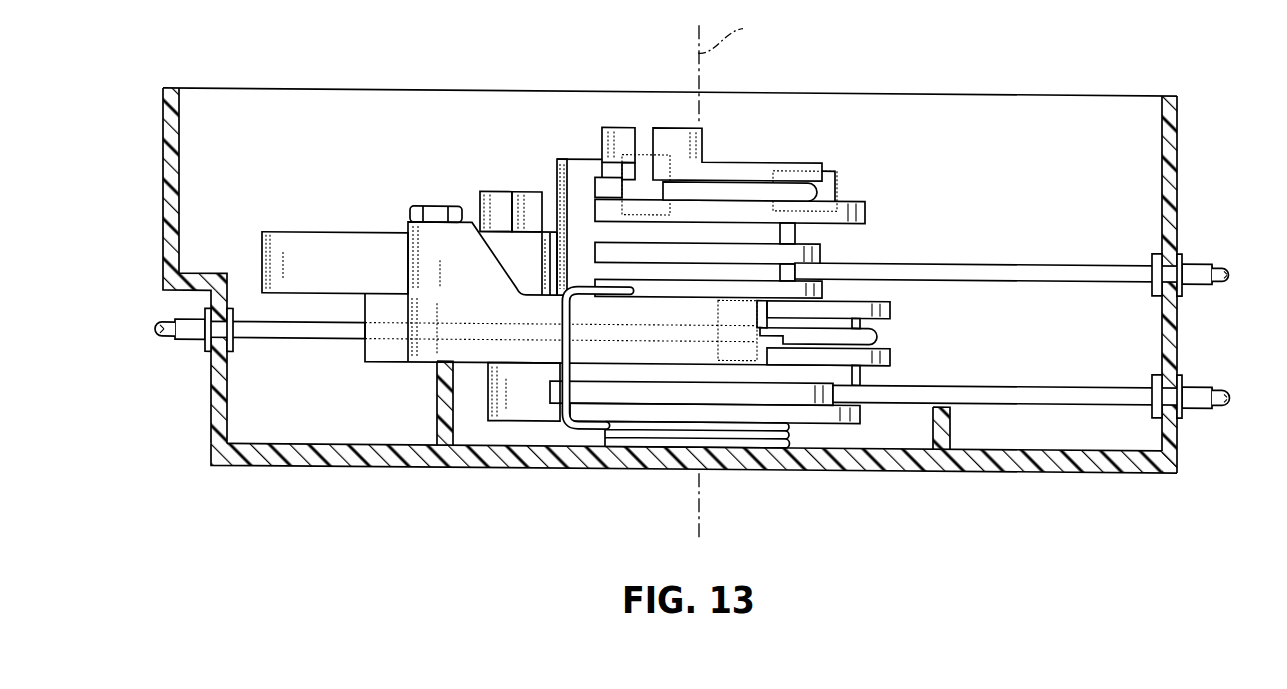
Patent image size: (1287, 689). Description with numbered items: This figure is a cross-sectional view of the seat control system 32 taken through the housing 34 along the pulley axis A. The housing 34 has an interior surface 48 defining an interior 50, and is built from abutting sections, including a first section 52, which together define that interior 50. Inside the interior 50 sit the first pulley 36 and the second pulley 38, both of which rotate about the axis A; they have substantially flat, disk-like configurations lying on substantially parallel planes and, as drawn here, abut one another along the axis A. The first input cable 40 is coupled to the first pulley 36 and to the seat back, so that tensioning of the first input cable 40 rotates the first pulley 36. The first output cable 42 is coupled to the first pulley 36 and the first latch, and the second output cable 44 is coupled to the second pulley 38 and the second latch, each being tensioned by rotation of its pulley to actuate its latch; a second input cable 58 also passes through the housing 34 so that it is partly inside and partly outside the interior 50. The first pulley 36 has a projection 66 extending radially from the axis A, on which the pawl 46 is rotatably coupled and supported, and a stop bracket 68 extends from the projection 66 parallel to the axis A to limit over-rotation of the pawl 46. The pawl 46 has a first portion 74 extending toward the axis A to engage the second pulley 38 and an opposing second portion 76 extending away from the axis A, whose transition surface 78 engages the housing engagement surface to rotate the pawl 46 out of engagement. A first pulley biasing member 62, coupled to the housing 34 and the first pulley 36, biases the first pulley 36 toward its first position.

The seat control system 32 is at (703, 290).
The housing 34 is at (1186, 157).
The first pulley 36 is at (862, 425).
The second pulley 38 is at (868, 210).
The first input cable 40 is at (270, 347).
The first output cable 42 is at (1220, 380).
The second output cable 44 is at (1220, 259).
The pawl 46 is at (305, 231).
The interior surface 48 is at (179, 123).
The interior 50 is at (314, 122).
The first section 52 is at (1172, 456).
The second input cable 58 is at (819, 189).
The first pulley biasing member 62 is at (606, 436).
The projection 66 is at (428, 354).
The stop bracket 68 is at (465, 245).
The first portion 74 is at (530, 249).
The second portion 76 is at (278, 262).
The transition surface 78 is at (335, 257).